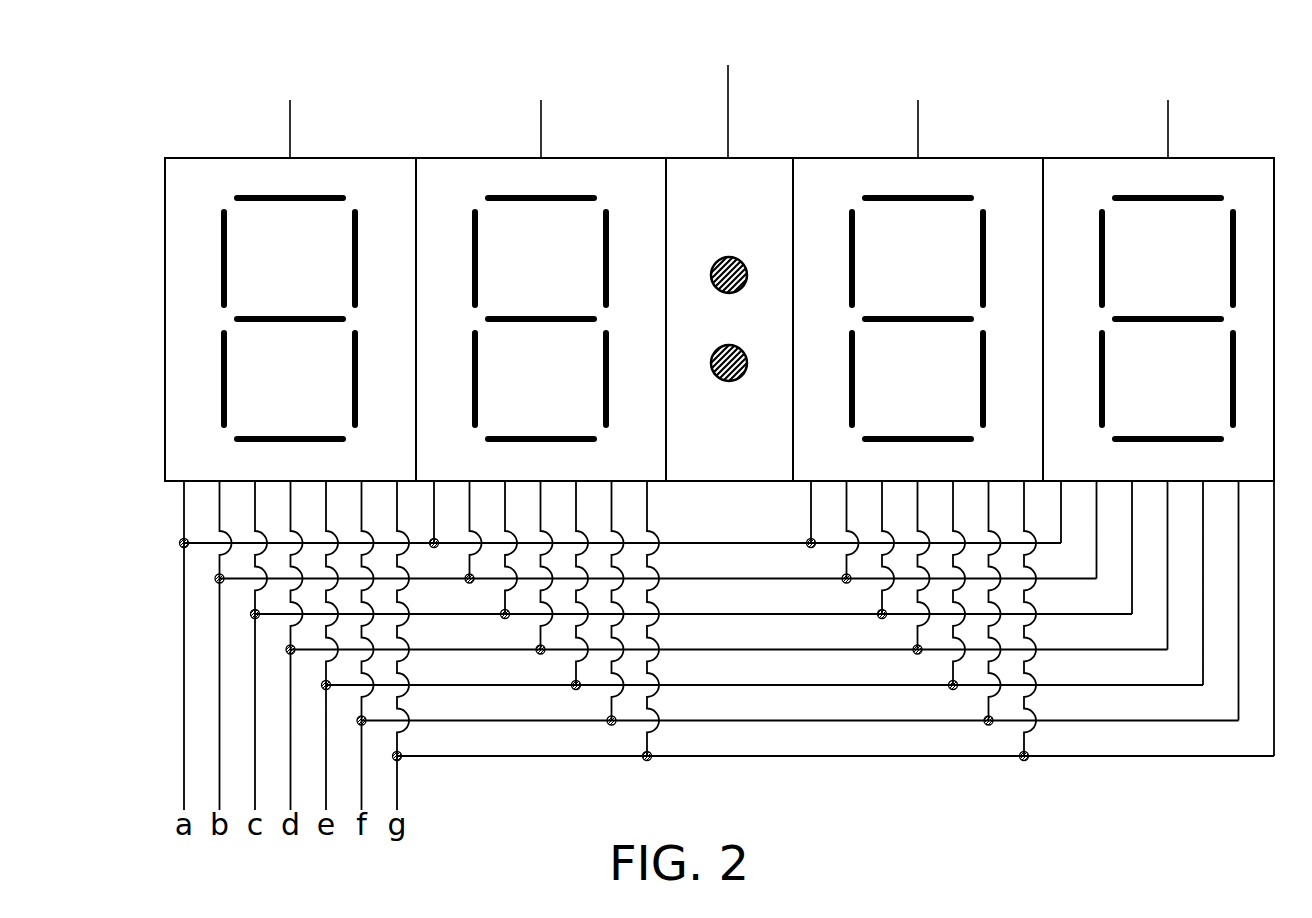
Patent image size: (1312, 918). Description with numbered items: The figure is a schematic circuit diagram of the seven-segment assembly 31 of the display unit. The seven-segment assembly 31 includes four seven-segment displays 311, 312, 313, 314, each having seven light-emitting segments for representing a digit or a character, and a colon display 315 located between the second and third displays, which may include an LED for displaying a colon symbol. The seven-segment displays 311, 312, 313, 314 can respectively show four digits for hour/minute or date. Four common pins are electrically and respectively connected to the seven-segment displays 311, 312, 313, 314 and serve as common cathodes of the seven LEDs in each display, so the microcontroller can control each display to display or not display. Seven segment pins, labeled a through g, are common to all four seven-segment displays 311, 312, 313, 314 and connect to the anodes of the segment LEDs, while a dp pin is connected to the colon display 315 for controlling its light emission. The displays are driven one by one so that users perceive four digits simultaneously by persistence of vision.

The seven-segment assembly 31 is at (192, 80).
The seven-segment display 311 is at (353, 158).
The seven-segment display 312 is at (604, 158).
The seven-segment display 313 is at (981, 158).
The seven-segment display 314 is at (1231, 158).
The colon display 315 is at (761, 158).